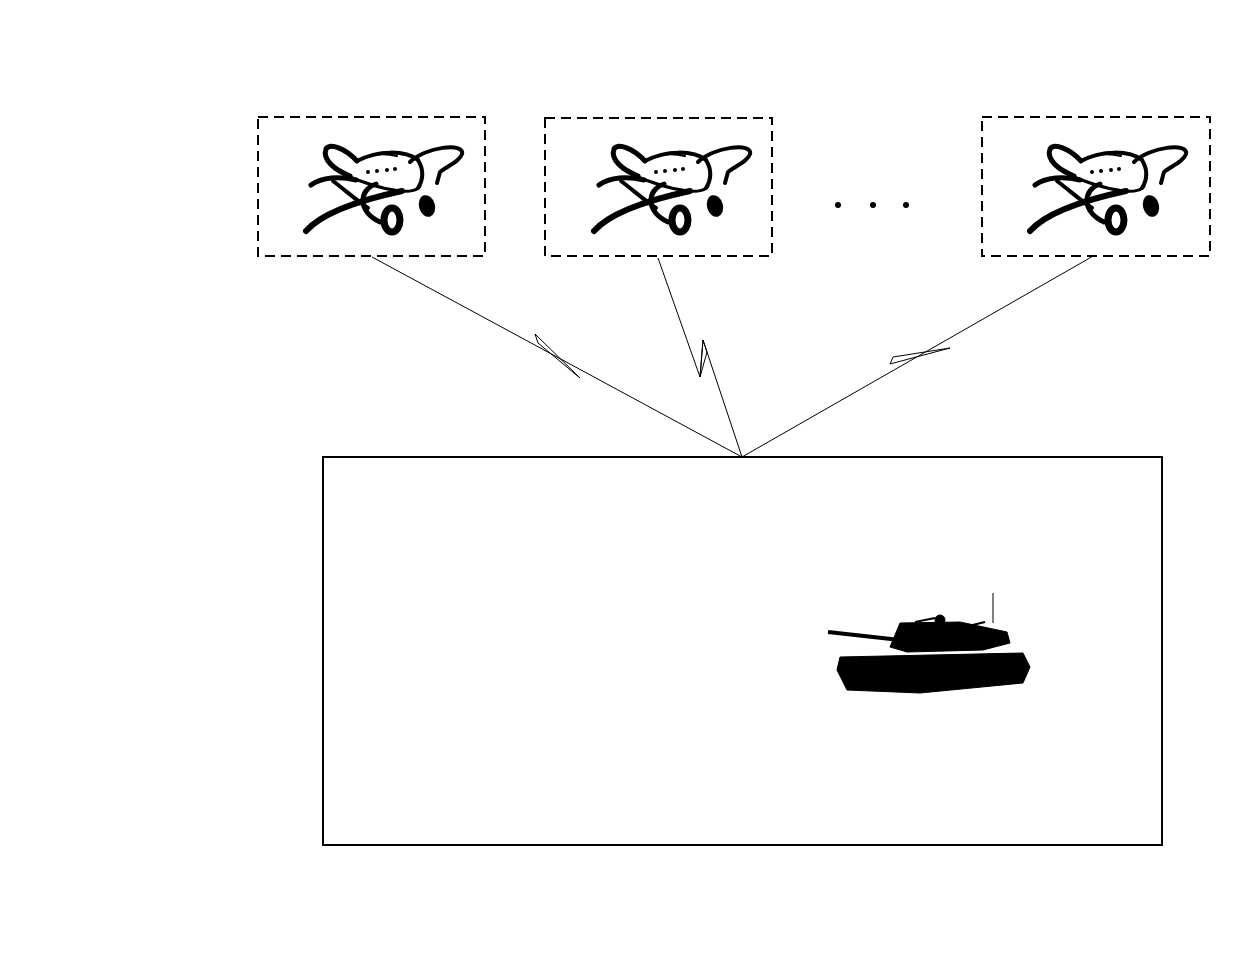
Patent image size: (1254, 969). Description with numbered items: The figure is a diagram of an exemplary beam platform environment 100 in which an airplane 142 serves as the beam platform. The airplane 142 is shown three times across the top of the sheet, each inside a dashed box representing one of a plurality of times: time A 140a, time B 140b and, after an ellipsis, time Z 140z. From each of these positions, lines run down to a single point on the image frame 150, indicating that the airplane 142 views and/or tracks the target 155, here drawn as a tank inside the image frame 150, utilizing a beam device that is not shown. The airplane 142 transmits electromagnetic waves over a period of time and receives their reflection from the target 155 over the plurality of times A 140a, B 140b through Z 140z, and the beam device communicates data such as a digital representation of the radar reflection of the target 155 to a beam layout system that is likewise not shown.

The beam platform environment 100 is at (710, 464).
The time A 140a is at (370, 116).
The time B 140b is at (655, 116).
The time Z 140z is at (1092, 115).
The airplane 142 is at (713, 243).
The image frame 150 is at (681, 651).
The target 155 is at (929, 685).